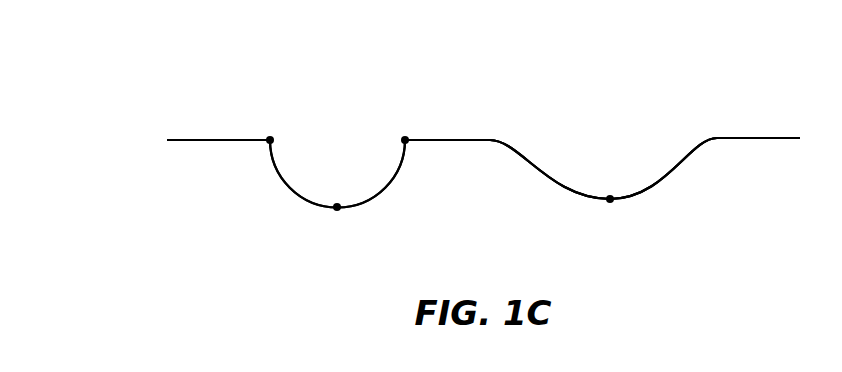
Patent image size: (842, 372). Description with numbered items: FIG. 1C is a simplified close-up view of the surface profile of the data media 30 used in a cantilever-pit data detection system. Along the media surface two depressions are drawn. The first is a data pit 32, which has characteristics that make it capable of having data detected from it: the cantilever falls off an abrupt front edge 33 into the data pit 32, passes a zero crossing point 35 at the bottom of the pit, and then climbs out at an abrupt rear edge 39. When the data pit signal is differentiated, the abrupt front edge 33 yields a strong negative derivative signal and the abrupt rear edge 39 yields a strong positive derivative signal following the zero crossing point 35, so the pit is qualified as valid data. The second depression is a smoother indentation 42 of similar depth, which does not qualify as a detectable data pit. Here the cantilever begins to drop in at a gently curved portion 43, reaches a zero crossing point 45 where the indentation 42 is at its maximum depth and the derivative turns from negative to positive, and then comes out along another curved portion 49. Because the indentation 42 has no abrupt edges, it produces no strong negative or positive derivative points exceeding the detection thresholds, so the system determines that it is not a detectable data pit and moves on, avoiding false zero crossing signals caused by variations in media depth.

The data media 30 is at (152, 88).
The data pit 32 is at (372, 118).
The abrupt front edge 33 is at (268, 138).
The zero crossing point 35 is at (337, 207).
The abrupt rear edge 39 is at (406, 138).
The smooth indentation 42 is at (617, 110).
The curved portion 43 is at (522, 124).
The zero crossing point 45 is at (610, 199).
The curved portion 49 is at (690, 120).